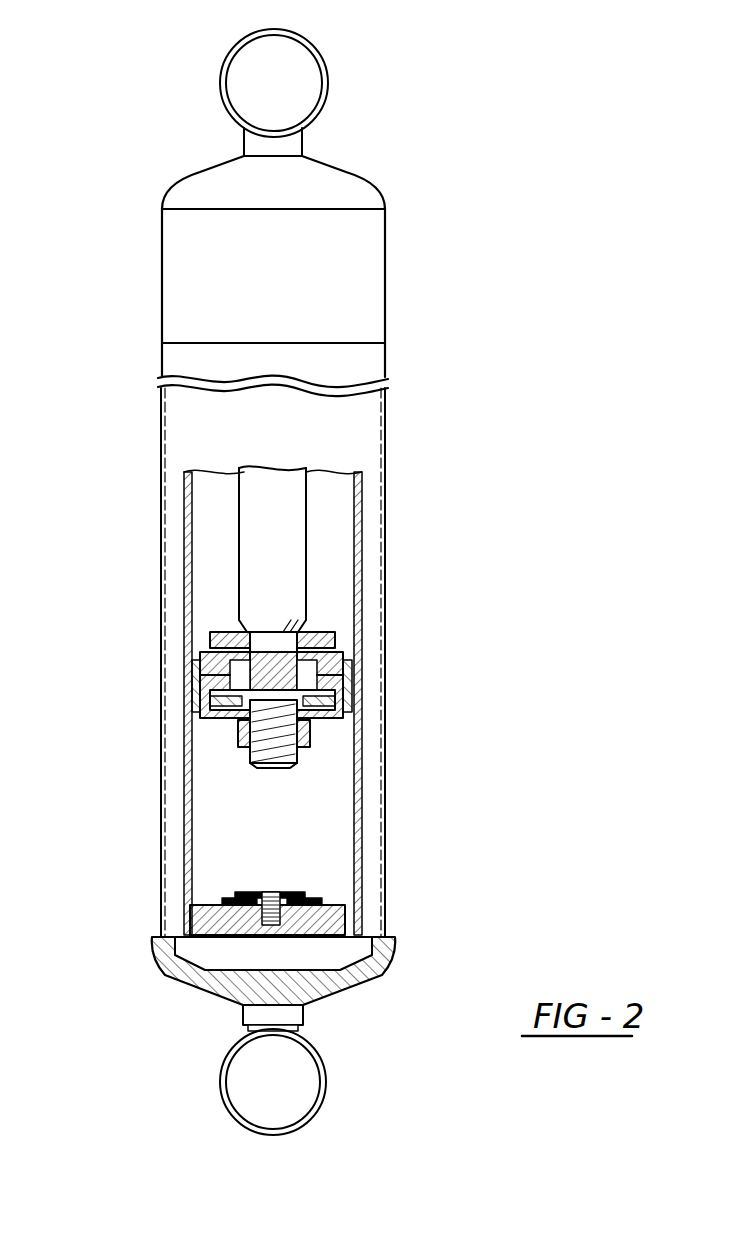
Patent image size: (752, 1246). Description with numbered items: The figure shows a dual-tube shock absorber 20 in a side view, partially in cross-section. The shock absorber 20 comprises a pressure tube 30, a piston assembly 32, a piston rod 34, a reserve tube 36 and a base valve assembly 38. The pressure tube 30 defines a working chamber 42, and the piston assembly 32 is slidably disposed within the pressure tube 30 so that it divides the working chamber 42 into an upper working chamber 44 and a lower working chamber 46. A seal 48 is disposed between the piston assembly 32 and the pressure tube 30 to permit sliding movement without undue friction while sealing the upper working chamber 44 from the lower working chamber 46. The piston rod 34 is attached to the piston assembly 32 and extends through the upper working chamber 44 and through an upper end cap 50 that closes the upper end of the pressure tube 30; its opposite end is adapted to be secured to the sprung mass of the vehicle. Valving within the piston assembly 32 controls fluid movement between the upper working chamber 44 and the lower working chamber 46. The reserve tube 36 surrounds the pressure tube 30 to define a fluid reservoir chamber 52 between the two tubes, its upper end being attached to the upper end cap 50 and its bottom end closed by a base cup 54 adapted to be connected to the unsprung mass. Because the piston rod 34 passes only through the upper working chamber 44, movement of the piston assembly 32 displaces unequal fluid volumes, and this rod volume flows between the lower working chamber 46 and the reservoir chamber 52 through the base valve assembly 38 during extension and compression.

The shock absorber 20 is at (303, 582).
The pressure tube 30 is at (360, 490).
The piston assembly 32 is at (332, 672).
The piston rod 34 is at (277, 545).
The reserve tube 36 is at (383, 745).
The base valve assembly 38 is at (352, 910).
The working chamber 42 is at (277, 830).
The upper working chamber 44 is at (323, 560).
The lower working chamber 46 is at (218, 772).
The seal 48 is at (194, 682).
The upper end cap 50 is at (345, 191).
The fluid reservoir chamber 52 is at (176, 517).
The base cup 54 is at (192, 966).